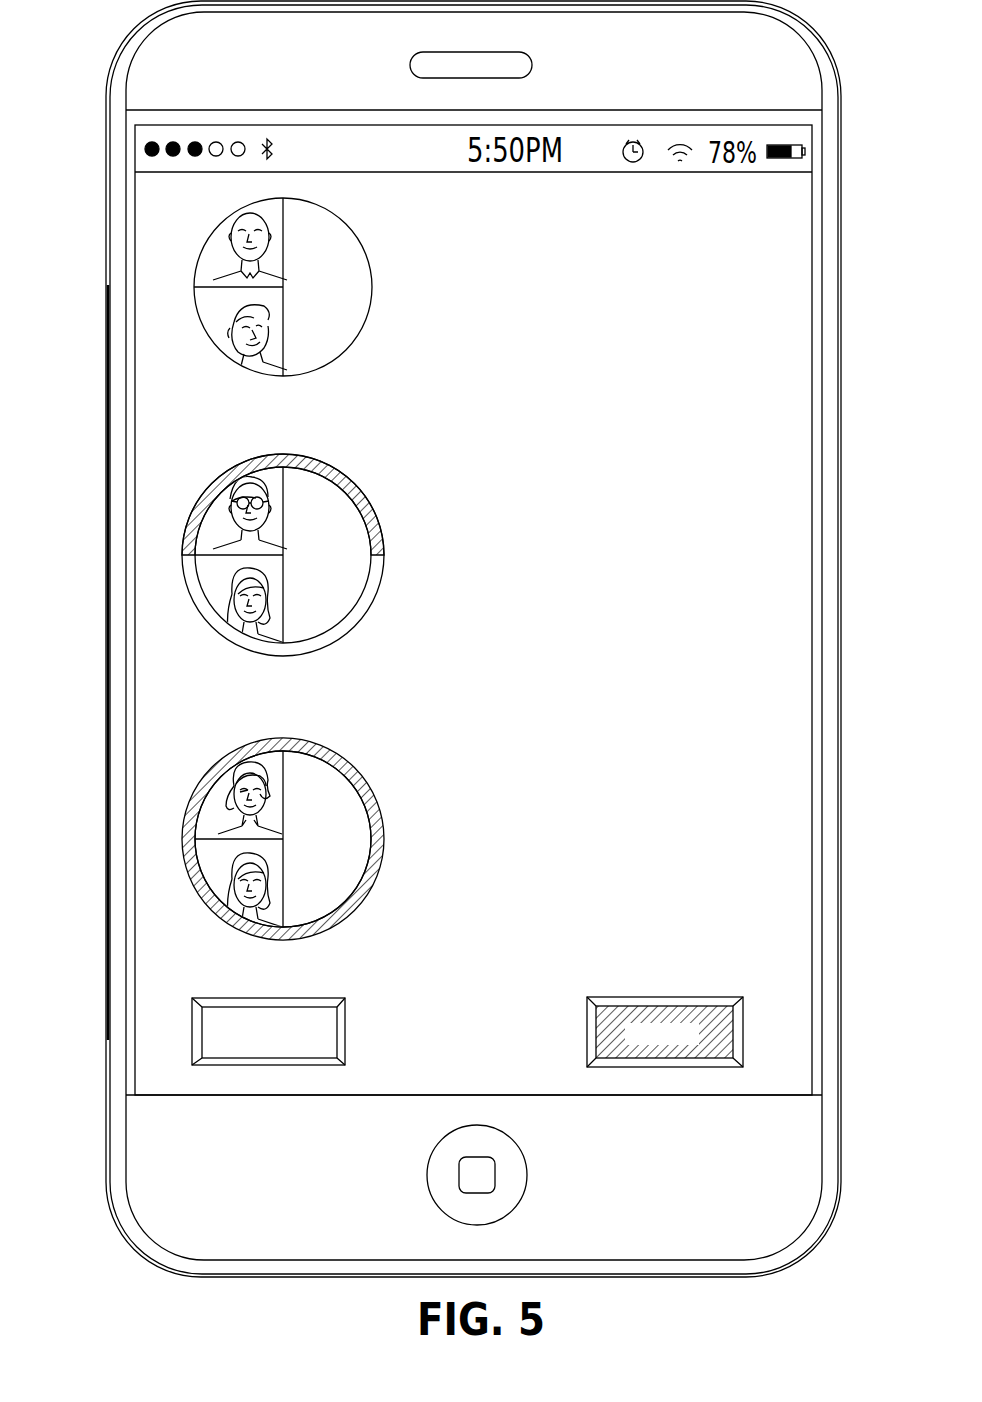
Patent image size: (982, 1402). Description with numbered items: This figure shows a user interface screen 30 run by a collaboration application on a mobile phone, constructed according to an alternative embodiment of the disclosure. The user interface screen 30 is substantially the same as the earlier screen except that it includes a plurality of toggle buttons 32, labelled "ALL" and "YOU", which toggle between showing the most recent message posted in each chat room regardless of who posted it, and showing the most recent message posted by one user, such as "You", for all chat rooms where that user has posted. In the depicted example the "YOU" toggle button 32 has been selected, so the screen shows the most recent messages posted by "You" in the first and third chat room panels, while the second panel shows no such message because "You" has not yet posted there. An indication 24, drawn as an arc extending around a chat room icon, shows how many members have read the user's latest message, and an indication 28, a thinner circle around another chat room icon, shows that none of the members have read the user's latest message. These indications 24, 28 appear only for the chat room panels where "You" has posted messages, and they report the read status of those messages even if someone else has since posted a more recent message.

The user interface screen 30 is at (148, 210).
The indication 24 is at (351, 484).
The indication 28 is at (351, 761).
The toggle buttons 32 is at (587, 1035).